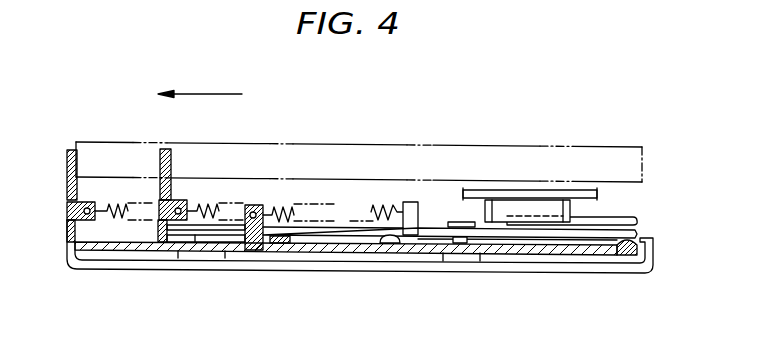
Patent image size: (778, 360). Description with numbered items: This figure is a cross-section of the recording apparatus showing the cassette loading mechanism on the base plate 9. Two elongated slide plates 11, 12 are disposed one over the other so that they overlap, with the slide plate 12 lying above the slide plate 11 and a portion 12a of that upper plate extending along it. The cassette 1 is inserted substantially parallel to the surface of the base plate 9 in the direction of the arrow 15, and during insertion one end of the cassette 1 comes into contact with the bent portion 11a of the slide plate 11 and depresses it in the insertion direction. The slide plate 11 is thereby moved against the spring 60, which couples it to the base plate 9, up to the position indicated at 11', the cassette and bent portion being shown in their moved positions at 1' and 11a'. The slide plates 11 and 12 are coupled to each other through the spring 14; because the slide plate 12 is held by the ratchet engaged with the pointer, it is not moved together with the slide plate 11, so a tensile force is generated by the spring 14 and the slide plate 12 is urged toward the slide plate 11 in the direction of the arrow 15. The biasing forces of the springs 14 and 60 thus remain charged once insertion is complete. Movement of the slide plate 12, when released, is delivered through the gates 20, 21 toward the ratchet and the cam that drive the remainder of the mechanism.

The cassette 1 is at (359, 140).
The cassette at inserted position 1' is at (95, 139).
The base plate 9 is at (97, 263).
The slide plate 11 is at (356, 263).
The slide plate at moved position 11' is at (50, 236).
The bent portion 11a is at (202, 161).
The bent portion at moved position 11a' is at (99, 161).
The slide plate 12 is at (350, 229).
The slide plate portion 12a is at (632, 217).
The spring 14 is at (228, 204).
The arrow 15 is at (210, 93).
The gate 20 is at (553, 192).
The gate 21 is at (498, 208).
The spring 60 is at (278, 205).